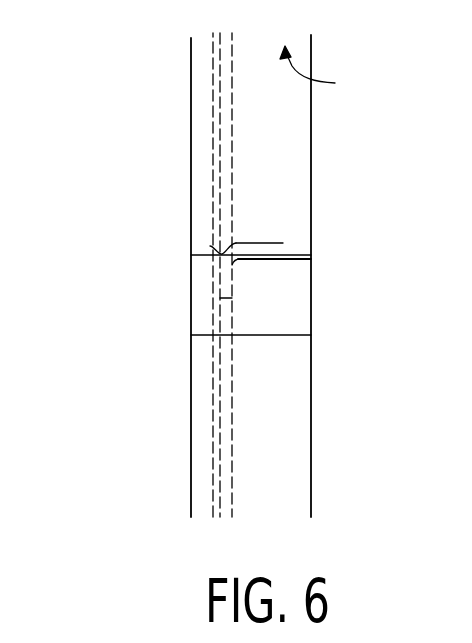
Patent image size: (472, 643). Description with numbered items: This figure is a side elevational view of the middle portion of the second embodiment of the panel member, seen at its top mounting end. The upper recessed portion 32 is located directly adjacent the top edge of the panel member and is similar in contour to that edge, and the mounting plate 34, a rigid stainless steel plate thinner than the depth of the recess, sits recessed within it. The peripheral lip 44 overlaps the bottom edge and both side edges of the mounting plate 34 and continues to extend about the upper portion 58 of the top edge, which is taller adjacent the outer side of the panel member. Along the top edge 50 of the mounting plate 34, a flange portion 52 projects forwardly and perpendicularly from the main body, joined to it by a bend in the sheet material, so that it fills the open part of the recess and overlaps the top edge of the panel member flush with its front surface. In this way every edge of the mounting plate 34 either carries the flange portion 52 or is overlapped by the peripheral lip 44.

The upper recessed portion 32 is at (232, 90).
The mounting plate 34 is at (222, 140).
The peripheral lip 44 is at (212, 172).
The top edge 50 is at (210, 246).
The flange portion 52 is at (283, 243).
The upper portion 58 is at (329, 74).